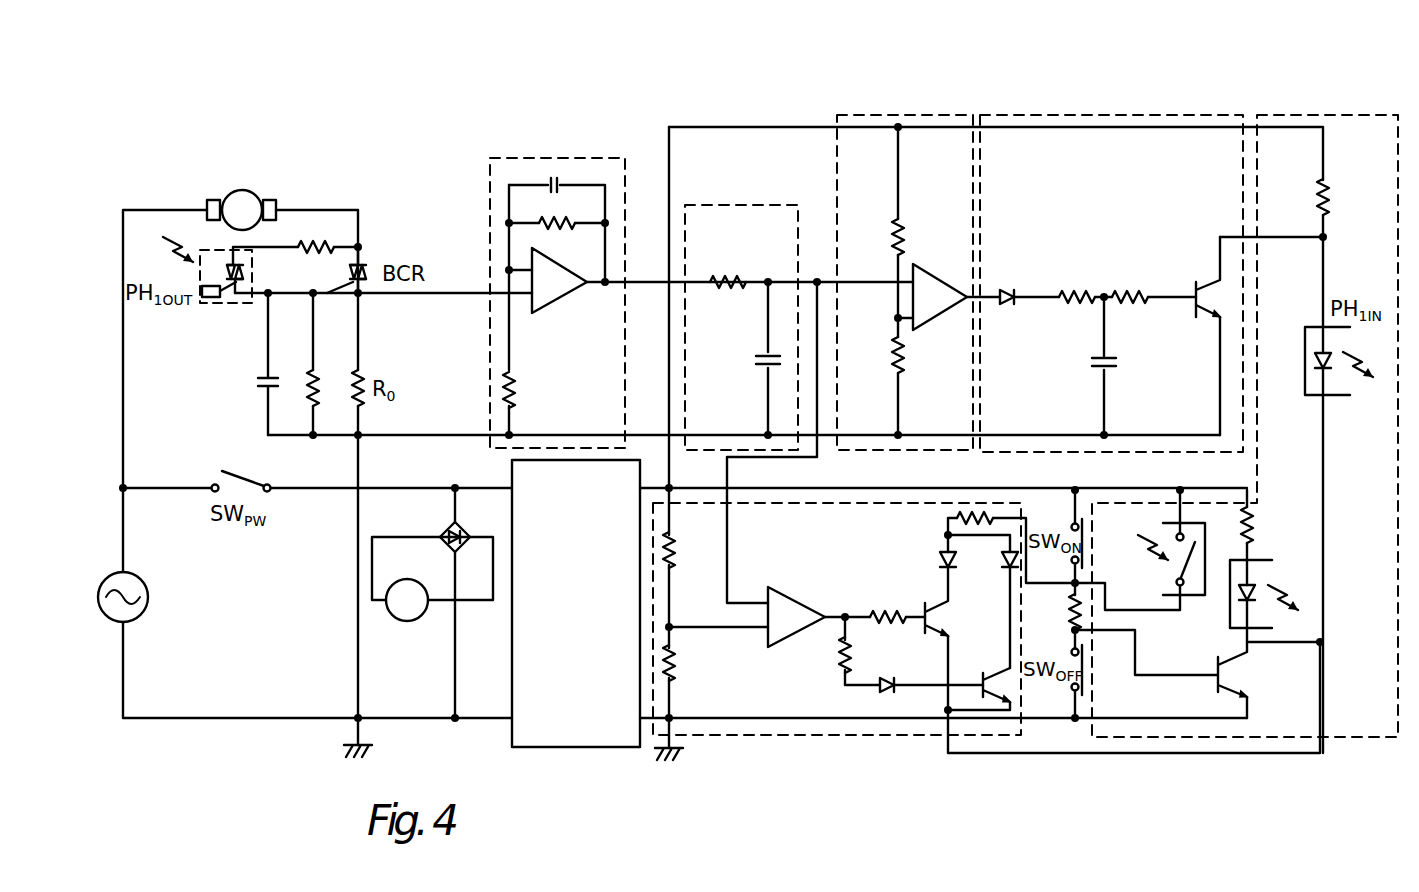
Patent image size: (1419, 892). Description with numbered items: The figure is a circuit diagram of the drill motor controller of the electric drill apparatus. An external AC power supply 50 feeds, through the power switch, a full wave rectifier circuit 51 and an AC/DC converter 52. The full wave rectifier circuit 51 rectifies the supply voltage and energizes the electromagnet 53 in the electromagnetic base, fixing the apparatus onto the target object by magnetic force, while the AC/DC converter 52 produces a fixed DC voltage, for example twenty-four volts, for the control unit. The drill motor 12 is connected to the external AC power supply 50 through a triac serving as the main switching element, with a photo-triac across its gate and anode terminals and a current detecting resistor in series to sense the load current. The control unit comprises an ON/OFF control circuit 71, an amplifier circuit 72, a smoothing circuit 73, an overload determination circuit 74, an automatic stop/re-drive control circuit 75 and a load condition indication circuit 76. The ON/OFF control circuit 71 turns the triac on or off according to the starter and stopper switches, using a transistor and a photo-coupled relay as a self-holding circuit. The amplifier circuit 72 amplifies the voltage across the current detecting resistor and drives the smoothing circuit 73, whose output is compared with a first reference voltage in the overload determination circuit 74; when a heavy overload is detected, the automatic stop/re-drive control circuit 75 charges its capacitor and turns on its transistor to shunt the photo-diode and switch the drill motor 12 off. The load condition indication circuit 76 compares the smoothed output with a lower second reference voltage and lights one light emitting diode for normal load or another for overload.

The drill motor 12 is at (226, 196).
The external AC power supply 50 is at (148, 591).
The full wave rectifier circuit 51 is at (447, 529).
The AC/DC converter 52 is at (577, 748).
The electromagnet 53 is at (396, 622).
The ON/OFF control circuit 71 is at (1198, 738).
The amplifier circuit 72 is at (489, 193).
The smoothing circuit 73 is at (684, 205).
The overload determination circuit 74 is at (858, 110).
The automatic stop/re-drive control circuit 75 is at (1218, 112).
The load condition indication circuit 76 is at (753, 735).